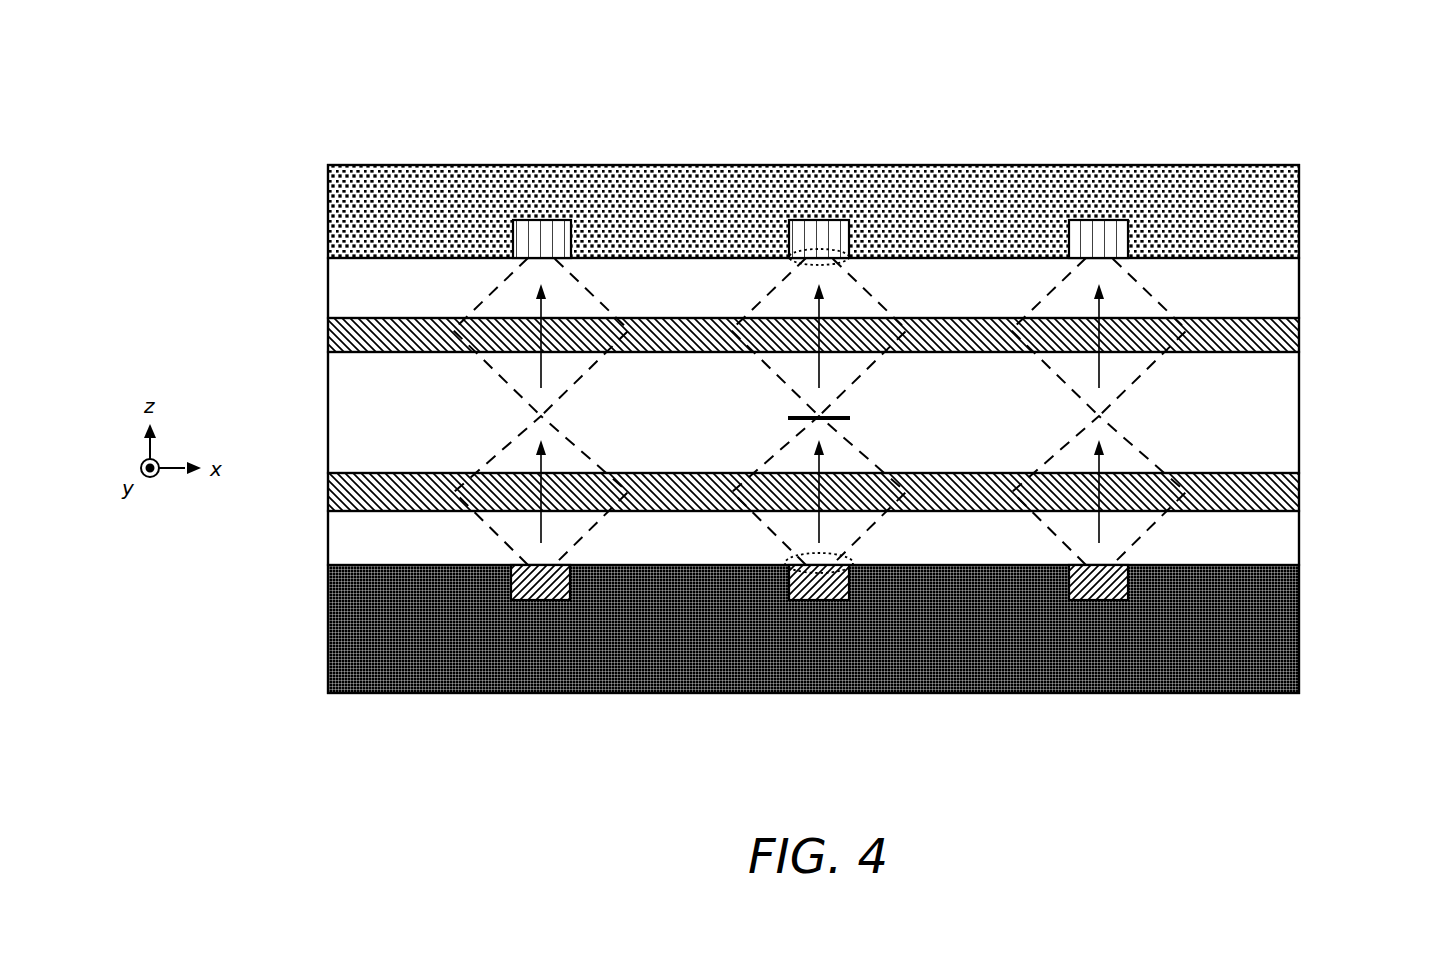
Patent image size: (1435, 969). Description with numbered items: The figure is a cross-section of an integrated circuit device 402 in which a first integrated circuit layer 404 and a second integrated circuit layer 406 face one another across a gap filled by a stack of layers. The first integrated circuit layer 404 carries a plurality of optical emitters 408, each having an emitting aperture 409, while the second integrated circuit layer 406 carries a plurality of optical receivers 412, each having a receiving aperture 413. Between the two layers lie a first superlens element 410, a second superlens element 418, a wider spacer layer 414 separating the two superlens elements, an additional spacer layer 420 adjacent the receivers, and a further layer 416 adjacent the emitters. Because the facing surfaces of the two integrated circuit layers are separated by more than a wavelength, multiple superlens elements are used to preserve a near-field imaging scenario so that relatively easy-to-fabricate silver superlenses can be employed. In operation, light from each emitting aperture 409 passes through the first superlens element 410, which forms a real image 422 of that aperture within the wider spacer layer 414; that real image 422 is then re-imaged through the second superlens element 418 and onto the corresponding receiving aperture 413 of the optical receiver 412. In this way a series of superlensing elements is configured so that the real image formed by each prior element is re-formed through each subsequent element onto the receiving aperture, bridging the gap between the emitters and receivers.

The integrated circuit device 402 is at (248, 103).
The first integrated circuit layer 404 is at (328, 643).
The second integrated circuit layer 406 is at (328, 217).
The optical emitters 408 is at (541, 600).
The emitting apertures 409 is at (850, 558).
The superlens element 410 is at (1300, 490).
The optical receivers 412 is at (533, 221).
The receiving apertures 413 is at (846, 262).
The wider spacer layer 414 is at (1300, 418).
The lower spacer layer 416 is at (1300, 535).
The second superlens element 418 is at (1300, 336).
The additional spacer layer 420 is at (1300, 287).
The real image 422 is at (850, 419).